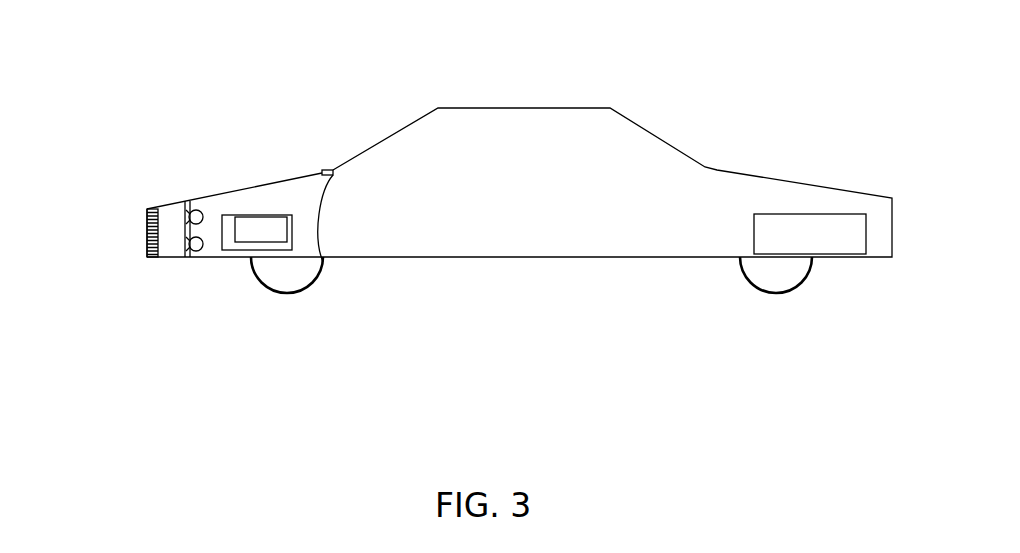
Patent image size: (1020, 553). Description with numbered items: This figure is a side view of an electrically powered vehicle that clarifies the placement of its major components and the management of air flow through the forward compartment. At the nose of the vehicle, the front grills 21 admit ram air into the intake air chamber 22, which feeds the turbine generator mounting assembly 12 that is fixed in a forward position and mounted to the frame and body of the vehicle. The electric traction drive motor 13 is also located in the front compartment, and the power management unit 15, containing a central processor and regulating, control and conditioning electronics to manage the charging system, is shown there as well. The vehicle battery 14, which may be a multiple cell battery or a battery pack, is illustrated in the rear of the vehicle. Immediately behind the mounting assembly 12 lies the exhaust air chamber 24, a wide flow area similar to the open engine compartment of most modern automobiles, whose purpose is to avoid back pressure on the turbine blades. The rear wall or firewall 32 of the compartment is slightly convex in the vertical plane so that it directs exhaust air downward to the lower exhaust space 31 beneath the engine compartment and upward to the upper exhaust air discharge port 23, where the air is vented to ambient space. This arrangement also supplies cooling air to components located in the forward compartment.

The turbine generator mounting assembly 12 is at (229, 149).
The electric traction drive motor 13 is at (171, 301).
The vehicle battery 14 is at (729, 308).
The power management unit 15 is at (257, 308).
The front grills 21 is at (108, 274).
The intake air chamber 22 is at (142, 149).
The upper exhaust air discharge port 23 is at (396, 108).
The exhaust air chamber 24 is at (290, 127).
The lower exhaust space 31 is at (371, 321).
The firewall 32 is at (421, 289).